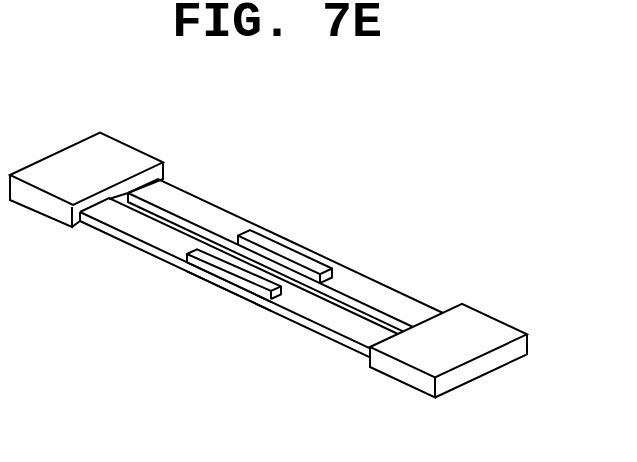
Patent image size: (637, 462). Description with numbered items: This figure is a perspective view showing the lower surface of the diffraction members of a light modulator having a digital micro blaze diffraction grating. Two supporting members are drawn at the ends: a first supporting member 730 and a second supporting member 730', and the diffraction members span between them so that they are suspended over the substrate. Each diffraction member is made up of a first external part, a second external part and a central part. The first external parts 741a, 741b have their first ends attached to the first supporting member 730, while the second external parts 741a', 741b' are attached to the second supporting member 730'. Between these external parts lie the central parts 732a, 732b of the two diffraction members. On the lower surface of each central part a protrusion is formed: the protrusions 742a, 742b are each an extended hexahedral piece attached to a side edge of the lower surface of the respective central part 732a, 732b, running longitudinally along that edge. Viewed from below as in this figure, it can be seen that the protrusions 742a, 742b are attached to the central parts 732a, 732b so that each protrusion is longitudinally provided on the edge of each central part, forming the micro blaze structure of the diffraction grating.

The first supporting member 730 is at (83, 160).
The second supporting member 730' is at (454, 364).
The first external part 741a is at (135, 249).
The first external part 741b is at (179, 235).
The second external part 741a' is at (301, 310).
The second external part 741b' is at (344, 313).
The protrusion 742a is at (217, 267).
The protrusion 742b is at (294, 247).
The central part 732a is at (203, 280).
The central part 732b is at (242, 280).